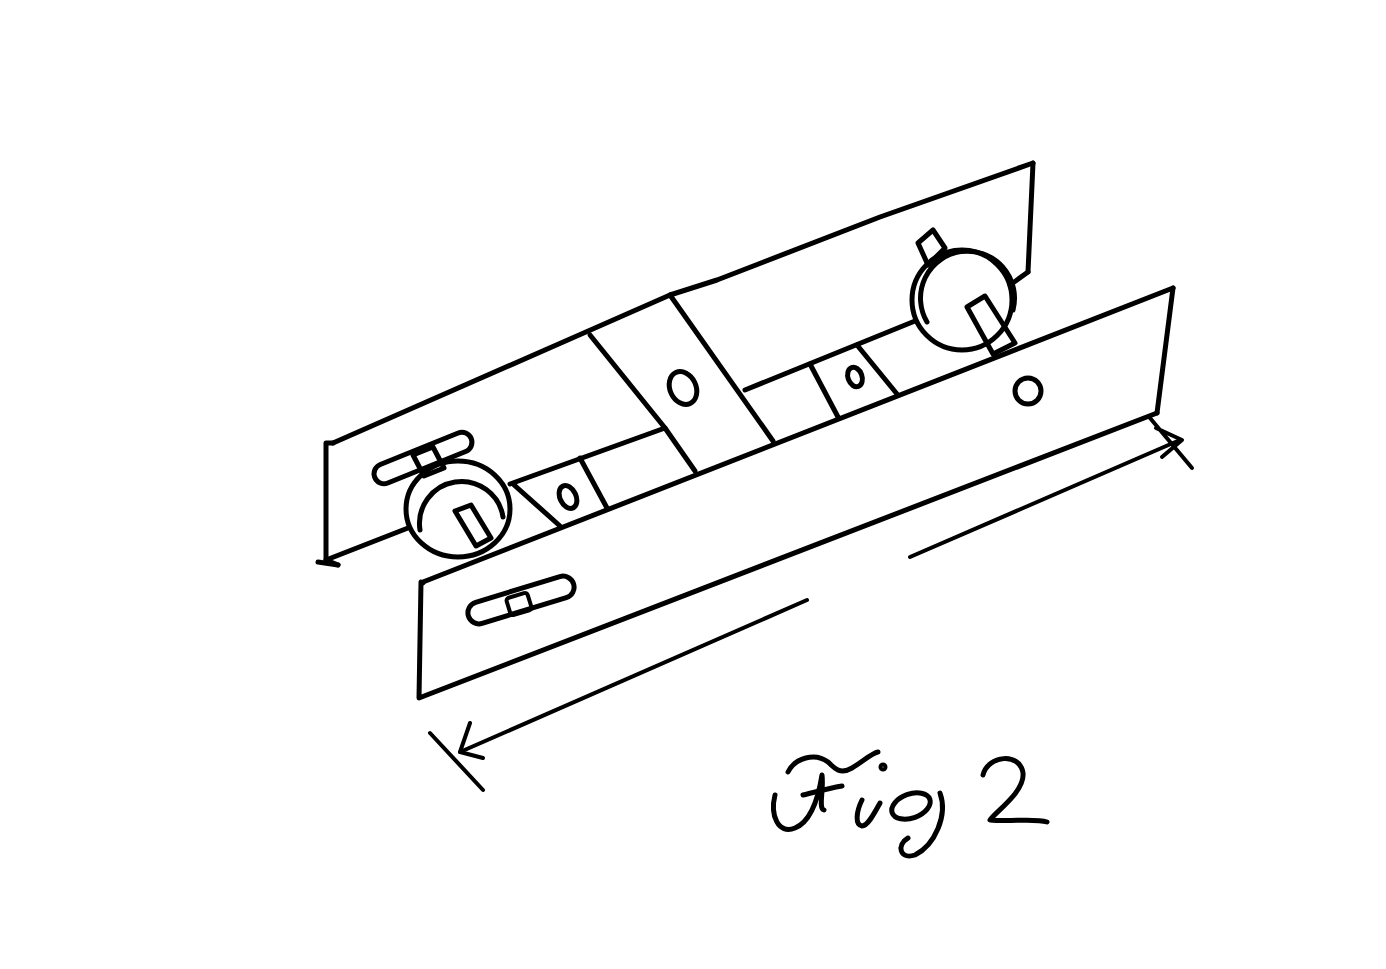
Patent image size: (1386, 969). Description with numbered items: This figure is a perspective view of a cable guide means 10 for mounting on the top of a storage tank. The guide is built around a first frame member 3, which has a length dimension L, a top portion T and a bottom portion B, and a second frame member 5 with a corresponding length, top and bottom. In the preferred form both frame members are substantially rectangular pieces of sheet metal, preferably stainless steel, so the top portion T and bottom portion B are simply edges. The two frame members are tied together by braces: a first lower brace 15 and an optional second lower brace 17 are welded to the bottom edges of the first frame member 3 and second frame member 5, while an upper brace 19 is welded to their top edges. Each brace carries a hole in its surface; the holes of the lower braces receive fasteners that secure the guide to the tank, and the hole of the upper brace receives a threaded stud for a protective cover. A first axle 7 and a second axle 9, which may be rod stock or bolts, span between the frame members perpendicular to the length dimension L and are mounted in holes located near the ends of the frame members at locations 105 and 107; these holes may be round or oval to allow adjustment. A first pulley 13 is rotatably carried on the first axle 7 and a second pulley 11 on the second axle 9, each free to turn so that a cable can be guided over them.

The cable guide means 10 is at (183, 275).
The top portion T is at (365, 430).
The bottom portion B is at (340, 565).
The first frame member 3 is at (1003, 207).
The second frame member 5 is at (1137, 350).
The first axle 7 is at (430, 553).
The second axle 9 is at (1012, 320).
The second pulley 11 is at (1030, 270).
The first pulley 13 is at (413, 532).
The first lower brace 15 is at (580, 478).
The second lower brace 17 is at (857, 342).
The upper brace 19 is at (658, 340).
The axle mounting hole location 105 is at (467, 627).
The axle mounting hole location 107 is at (1047, 391).
The length dimension L is at (811, 604).